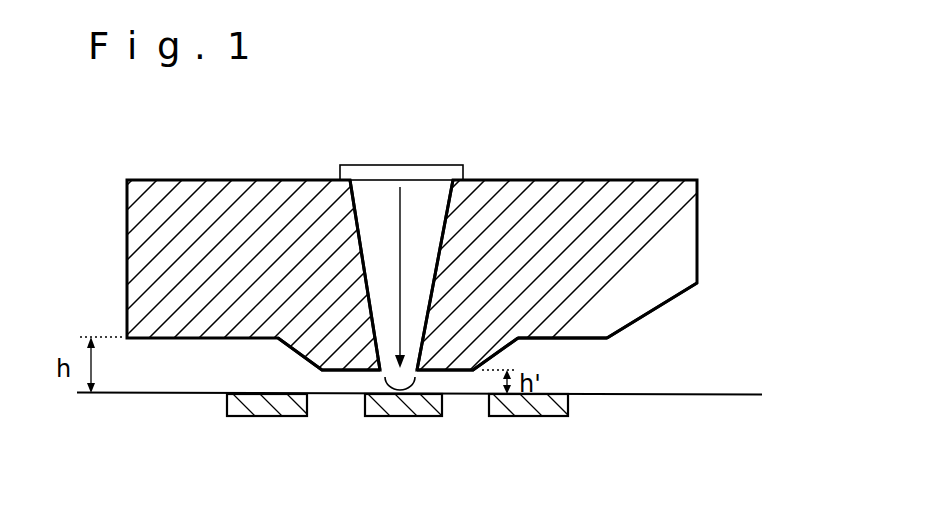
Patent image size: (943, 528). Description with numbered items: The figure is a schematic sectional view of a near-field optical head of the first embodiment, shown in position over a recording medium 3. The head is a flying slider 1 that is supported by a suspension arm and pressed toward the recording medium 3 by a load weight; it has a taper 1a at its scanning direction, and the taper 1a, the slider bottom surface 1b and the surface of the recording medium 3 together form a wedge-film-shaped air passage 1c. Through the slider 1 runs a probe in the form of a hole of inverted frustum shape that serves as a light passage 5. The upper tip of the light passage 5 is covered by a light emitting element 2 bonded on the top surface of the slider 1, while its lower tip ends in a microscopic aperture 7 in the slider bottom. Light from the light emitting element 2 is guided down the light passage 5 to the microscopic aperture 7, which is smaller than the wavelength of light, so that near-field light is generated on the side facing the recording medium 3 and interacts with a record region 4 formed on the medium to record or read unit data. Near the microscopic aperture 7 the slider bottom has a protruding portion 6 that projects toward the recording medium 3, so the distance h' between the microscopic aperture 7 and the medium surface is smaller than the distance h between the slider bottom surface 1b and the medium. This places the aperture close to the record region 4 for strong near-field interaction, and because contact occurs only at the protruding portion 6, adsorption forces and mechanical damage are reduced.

The slider 1 is at (612, 215).
The taper 1a is at (703, 303).
The slider bottom surface 1b is at (565, 342).
The air passage 1c is at (618, 362).
The light emitting element 2 is at (403, 170).
The recording medium 3 is at (419, 415).
The record region 4 is at (550, 417).
The light passage 5 is at (430, 213).
The protruding portion 6 is at (348, 357).
The microscopic aperture 7 is at (406, 377).